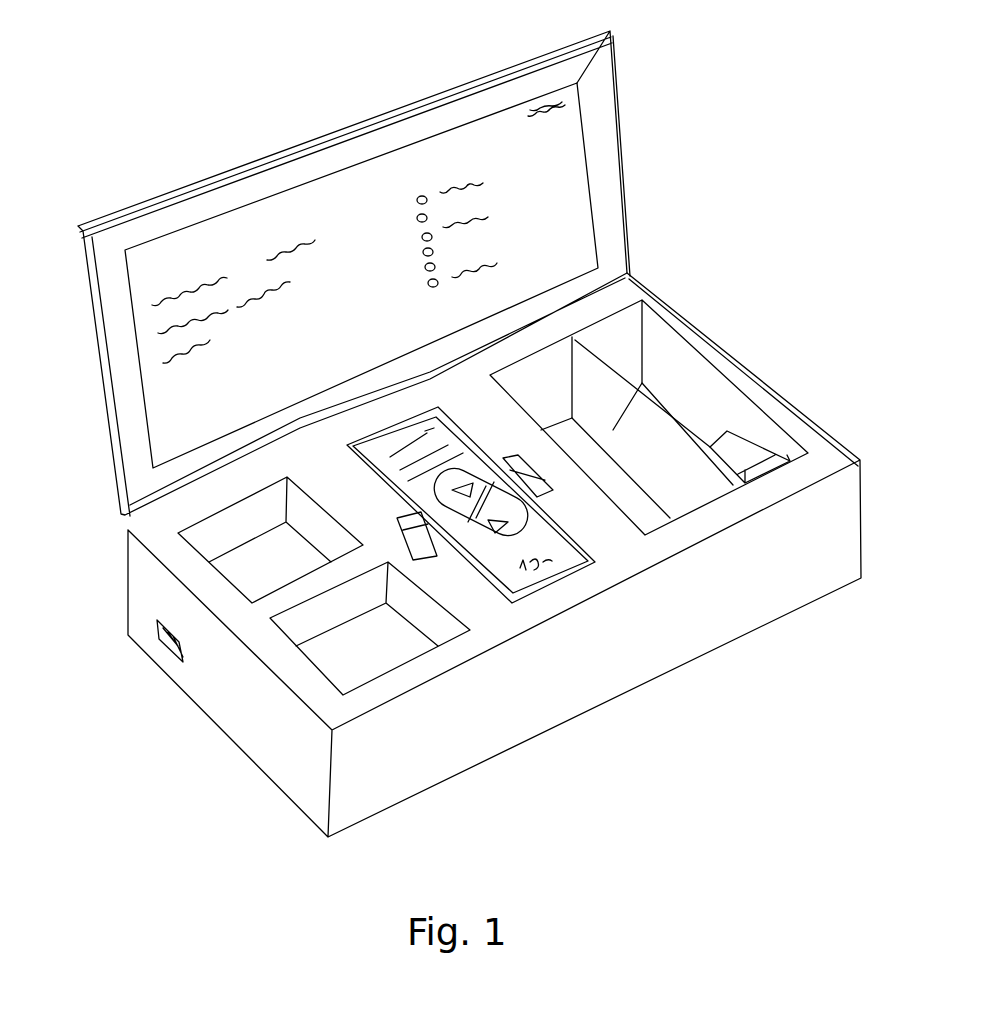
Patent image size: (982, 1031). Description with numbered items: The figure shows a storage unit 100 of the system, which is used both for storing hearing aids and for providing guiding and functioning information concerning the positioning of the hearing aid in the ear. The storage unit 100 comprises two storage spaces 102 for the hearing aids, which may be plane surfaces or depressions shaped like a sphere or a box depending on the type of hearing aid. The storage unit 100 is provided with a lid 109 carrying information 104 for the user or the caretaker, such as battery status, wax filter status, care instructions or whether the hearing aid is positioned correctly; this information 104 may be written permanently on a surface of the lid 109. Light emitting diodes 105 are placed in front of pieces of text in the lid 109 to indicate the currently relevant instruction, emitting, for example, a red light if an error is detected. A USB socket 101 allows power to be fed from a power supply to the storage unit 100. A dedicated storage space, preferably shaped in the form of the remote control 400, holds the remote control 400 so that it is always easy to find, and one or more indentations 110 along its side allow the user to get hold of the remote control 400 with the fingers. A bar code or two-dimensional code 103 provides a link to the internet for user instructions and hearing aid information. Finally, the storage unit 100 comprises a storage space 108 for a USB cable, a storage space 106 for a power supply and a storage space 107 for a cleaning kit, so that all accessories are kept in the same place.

The storage unit 100 is at (690, 157).
The USB socket 101 is at (173, 650).
The storage spaces 102 is at (248, 560).
The bar code or 2D code 103 is at (567, 105).
The information 104 is at (253, 261).
The light emitting diodes 105 is at (421, 196).
The storage space for power supply 106 is at (660, 347).
The storage space for cleaning kit 107 is at (735, 453).
The storage space for USB cable 108 is at (613, 430).
The lid 109 is at (453, 93).
The indentations 110 is at (440, 550).
The remote control 400 is at (517, 572).